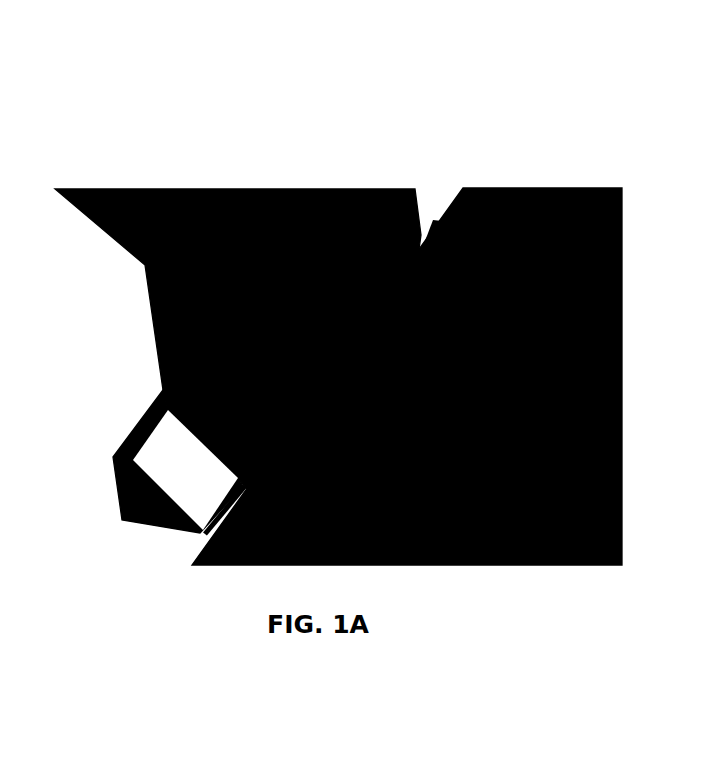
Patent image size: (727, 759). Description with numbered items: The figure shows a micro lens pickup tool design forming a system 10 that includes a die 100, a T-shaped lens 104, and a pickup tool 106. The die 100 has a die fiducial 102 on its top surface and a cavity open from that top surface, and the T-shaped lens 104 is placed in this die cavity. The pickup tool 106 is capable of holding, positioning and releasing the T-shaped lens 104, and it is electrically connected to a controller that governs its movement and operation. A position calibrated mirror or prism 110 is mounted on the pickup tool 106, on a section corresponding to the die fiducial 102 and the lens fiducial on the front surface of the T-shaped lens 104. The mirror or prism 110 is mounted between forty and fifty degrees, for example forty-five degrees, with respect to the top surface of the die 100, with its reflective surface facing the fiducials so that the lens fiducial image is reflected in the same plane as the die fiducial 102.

The system 10 is at (526, 83).
The die 100 is at (540, 190).
The die fiducial 102 is at (205, 532).
The T-shaped lens 104 is at (448, 238).
The pickup tool 106 is at (207, 238).
The mirror or prism 110 is at (170, 448).